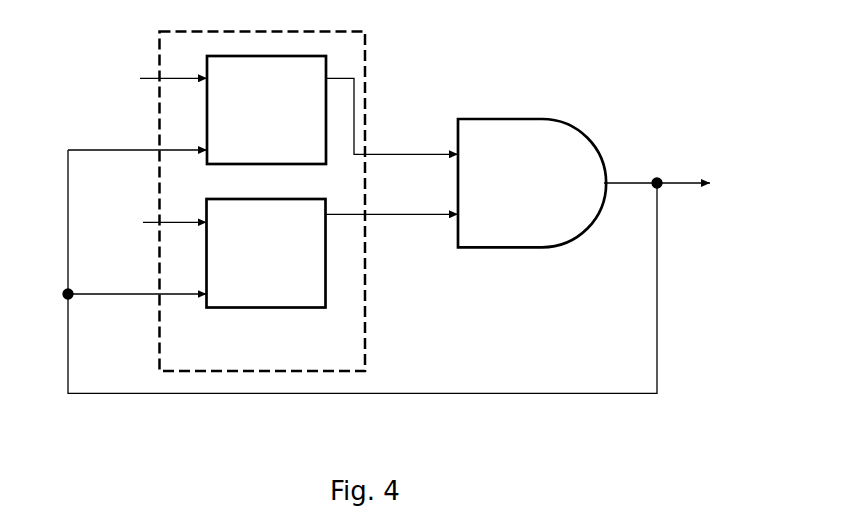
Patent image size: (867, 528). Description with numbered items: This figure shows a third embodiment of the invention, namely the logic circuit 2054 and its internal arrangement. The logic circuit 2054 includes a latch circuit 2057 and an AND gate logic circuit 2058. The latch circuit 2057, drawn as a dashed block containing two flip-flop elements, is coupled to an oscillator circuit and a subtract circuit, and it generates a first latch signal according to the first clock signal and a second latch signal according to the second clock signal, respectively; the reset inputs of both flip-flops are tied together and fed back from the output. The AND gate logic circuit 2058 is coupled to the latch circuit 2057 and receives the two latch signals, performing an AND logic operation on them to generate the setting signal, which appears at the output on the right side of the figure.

The logic circuit 2054 is at (664, 106).
The latch circuit 2057 is at (342, 358).
The AND gate logic circuit 2058 is at (513, 238).